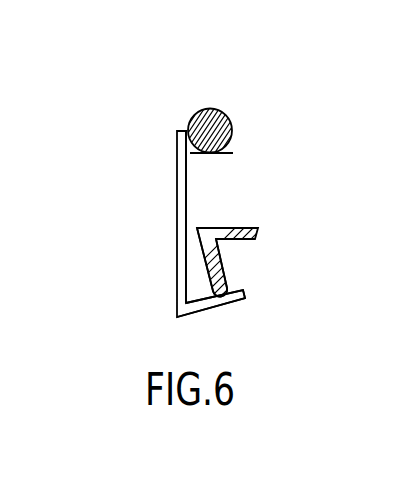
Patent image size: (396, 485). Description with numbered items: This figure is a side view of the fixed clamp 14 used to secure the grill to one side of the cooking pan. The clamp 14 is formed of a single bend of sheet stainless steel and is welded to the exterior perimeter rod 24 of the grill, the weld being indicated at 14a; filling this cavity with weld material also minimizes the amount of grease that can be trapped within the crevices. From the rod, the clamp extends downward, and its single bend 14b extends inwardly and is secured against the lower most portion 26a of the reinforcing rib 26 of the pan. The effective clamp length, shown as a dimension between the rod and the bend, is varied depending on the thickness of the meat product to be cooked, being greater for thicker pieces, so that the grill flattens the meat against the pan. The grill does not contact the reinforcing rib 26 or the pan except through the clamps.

The fixed clamp 14 is at (160, 149).
The weld 14a is at (182, 131).
The single bend 14b is at (213, 308).
The exterior perimeter rod 24 is at (221, 109).
The reinforcing rib 26 is at (258, 228).
The lower most portion of reinforcing rib 26a is at (228, 282).